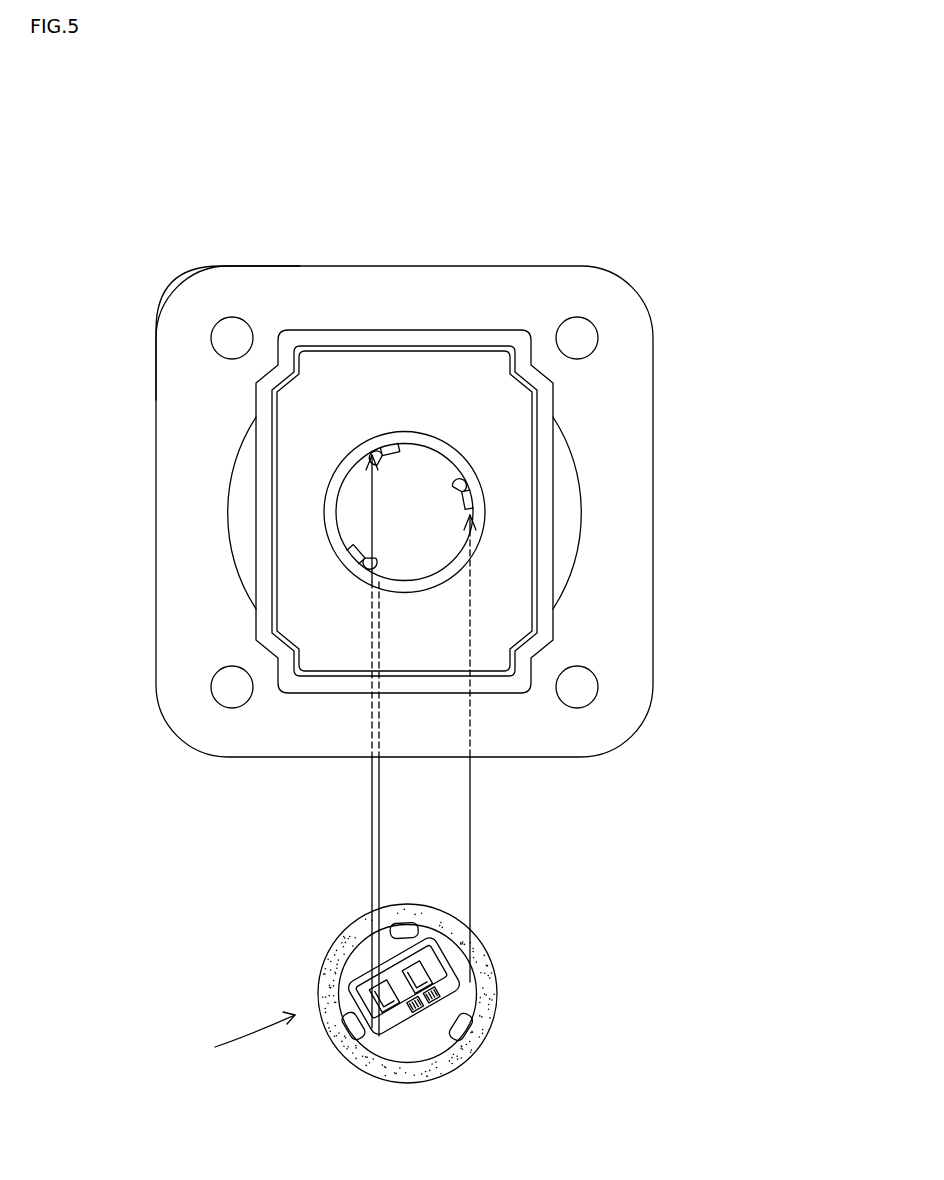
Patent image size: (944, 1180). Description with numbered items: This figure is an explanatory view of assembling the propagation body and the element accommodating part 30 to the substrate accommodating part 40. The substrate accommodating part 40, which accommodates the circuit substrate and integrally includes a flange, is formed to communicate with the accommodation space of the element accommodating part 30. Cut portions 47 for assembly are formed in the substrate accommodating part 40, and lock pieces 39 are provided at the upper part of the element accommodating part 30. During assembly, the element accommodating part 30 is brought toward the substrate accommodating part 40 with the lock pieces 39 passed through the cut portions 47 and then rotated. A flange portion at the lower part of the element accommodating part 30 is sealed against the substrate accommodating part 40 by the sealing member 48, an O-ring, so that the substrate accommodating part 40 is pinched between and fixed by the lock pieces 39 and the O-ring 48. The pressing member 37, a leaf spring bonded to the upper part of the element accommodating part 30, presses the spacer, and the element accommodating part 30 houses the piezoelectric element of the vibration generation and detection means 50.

The element accommodating part 30 is at (428, 1013).
The pressing member 37 is at (445, 955).
The lock pieces 39 is at (368, 938).
The substrate accommodating part 40 is at (404, 453).
The cut portions for assembly 47 is at (398, 447).
The sealing member 48 is at (485, 1025).
The vibration generation and detection means 50 is at (237, 1040).